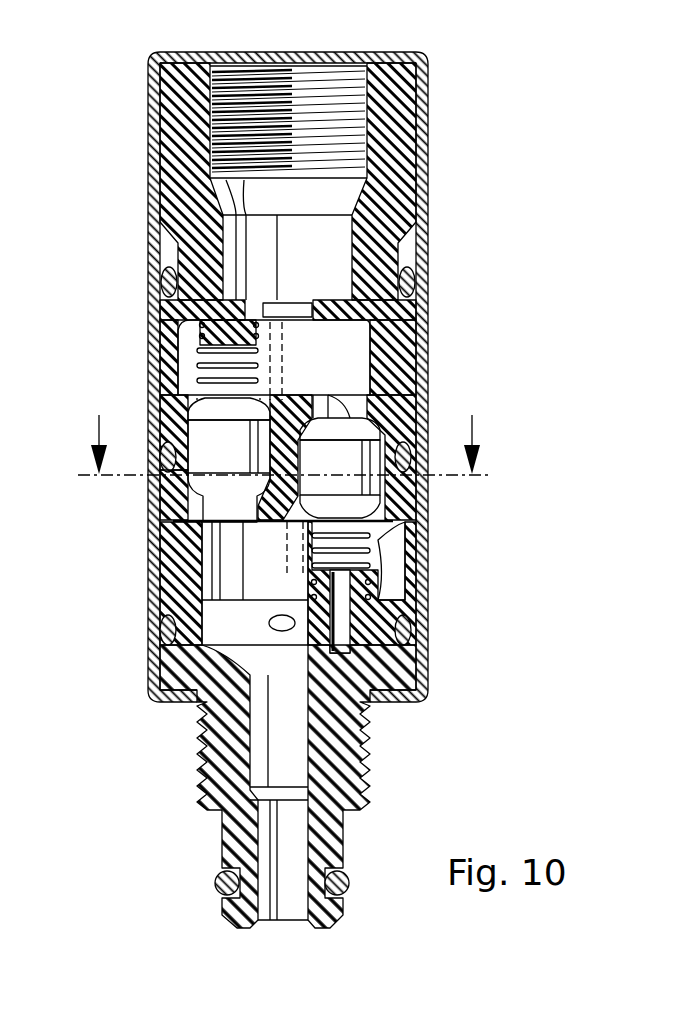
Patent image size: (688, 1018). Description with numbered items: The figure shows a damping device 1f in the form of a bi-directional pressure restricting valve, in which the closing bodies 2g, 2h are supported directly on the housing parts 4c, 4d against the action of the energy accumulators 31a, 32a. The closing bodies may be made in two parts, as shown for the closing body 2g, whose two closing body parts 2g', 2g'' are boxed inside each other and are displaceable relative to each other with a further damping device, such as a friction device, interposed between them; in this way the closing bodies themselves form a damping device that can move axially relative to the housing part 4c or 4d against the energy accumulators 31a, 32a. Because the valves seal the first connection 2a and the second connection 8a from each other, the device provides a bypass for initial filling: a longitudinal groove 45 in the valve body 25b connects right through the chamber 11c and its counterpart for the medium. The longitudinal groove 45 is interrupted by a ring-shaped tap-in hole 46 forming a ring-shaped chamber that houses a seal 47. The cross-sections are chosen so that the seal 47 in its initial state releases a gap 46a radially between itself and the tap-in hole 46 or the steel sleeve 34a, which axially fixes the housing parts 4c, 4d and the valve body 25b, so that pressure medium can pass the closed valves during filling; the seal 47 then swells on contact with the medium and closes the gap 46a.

The damping device 1f is at (535, 153).
The first connection 2a is at (335, 97).
The housing part 4d is at (178, 120).
The steel sleeve 34a is at (418, 210).
The energy accumulator 32a is at (200, 360).
The chamber 11c is at (349, 371).
The closing body part 2g' is at (393, 384).
The tap-in hole 46 is at (150, 445).
The gap 46a is at (150, 488).
The seal 47 is at (410, 460).
The closing body 2h is at (233, 458).
The closing body 2g is at (340, 468).
The valve body 25b is at (150, 518).
The longitudinal groove 45 is at (150, 555).
The closing body part 2g'' is at (401, 562).
The energy accumulator 31a is at (407, 568).
The housing part 4c is at (400, 670).
The second connection 8a is at (292, 902).